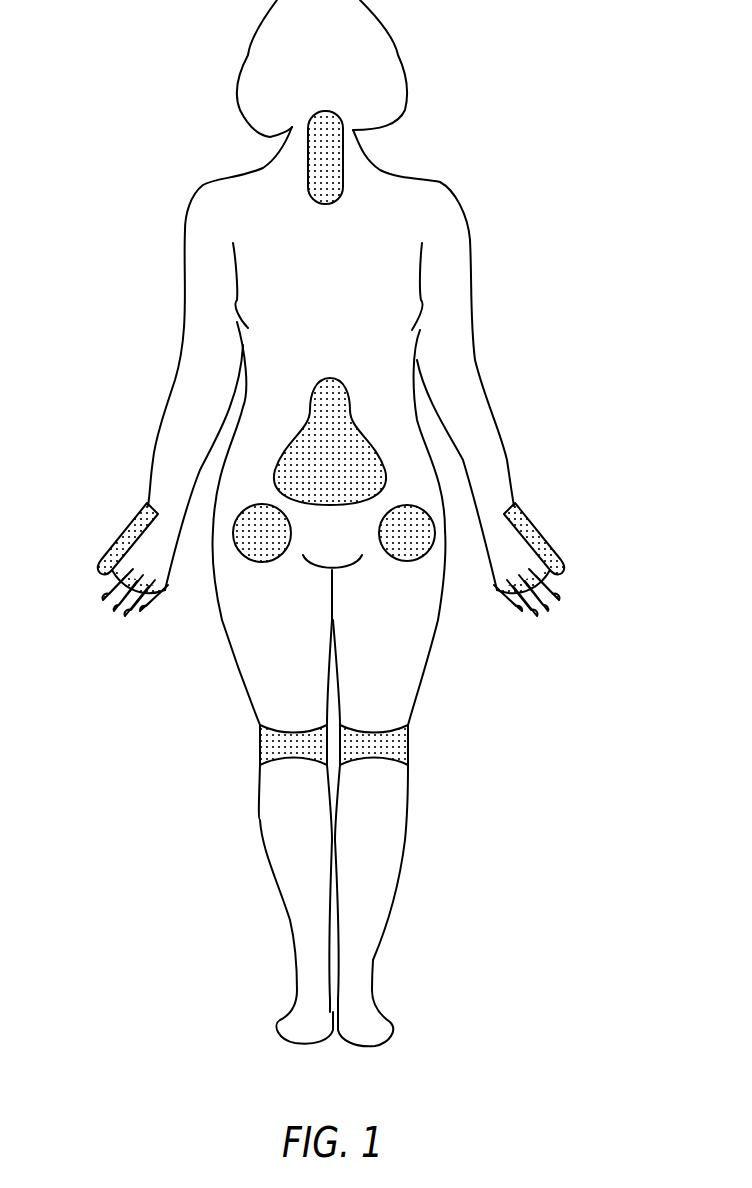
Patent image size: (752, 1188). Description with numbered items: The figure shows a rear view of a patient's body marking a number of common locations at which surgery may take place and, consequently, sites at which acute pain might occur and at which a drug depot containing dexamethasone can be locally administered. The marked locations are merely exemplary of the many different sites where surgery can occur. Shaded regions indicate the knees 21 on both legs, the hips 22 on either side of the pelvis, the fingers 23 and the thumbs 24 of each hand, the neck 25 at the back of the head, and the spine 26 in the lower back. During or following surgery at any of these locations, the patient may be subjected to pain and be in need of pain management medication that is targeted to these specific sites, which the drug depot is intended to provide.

The knees 21 is at (262, 742).
The hips 22 is at (257, 530).
The fingers 23 is at (122, 617).
The thumbs 24 is at (115, 543).
The neck 25 is at (327, 150).
The spine 26 is at (363, 450).